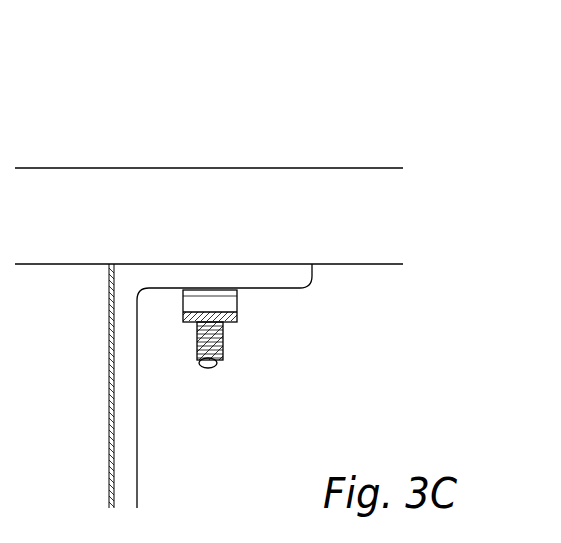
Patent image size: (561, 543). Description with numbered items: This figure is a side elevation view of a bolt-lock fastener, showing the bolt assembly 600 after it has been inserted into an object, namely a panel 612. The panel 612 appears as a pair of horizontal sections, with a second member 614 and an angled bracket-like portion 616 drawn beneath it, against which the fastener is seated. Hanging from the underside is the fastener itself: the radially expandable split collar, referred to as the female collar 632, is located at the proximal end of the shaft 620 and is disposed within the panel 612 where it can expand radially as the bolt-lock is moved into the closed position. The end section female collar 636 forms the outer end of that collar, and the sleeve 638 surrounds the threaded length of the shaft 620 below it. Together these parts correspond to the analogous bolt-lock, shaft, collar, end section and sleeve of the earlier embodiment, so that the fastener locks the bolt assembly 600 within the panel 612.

The bolt assembly 600 is at (270, 44).
The panel 612 is at (336, 185).
The second panel 614 is at (135, 466).
The bracket 616 is at (300, 277).
The female collar 632 is at (184, 291).
The end section female collar 636 is at (222, 308).
The sleeve 638 is at (226, 330).
The shaft 620 is at (216, 366).